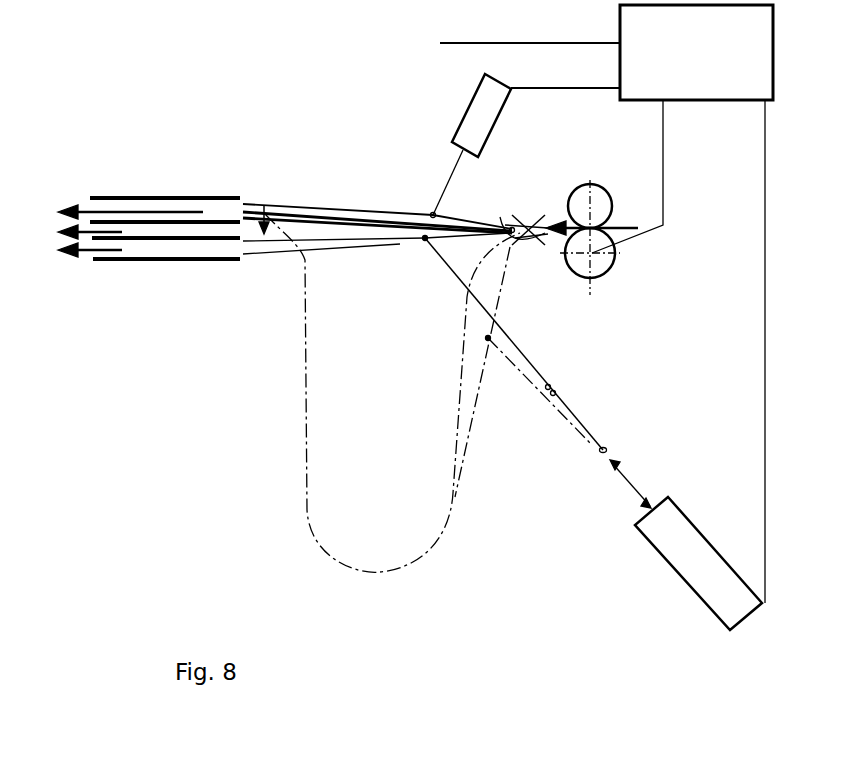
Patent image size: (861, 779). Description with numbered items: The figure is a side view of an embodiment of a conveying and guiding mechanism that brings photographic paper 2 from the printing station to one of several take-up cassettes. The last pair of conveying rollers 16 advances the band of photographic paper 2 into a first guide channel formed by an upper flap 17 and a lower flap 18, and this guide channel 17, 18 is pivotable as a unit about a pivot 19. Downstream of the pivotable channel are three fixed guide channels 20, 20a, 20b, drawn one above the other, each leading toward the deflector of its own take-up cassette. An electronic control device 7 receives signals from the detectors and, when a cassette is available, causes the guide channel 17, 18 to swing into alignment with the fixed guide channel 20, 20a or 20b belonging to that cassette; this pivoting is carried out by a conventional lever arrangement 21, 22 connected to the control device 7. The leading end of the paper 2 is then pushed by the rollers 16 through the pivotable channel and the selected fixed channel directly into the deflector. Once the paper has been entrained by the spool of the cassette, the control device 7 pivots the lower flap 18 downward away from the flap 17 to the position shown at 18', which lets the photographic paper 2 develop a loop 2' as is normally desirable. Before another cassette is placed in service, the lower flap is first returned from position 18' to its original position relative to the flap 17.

The photographic paper 2 is at (348, 171).
The loop 2' is at (521, 445).
The electronic control device 7 is at (720, 100).
The conveying rollers 16 is at (603, 213).
The flap 17 is at (338, 210).
The flap 18 is at (392, 393).
The position of lower flap 18' is at (498, 372).
The pivot 19 is at (502, 218).
The fixed guide channel 20 is at (200, 217).
The fixed guide channel 20a is at (163, 230).
The fixed guide channel 20b is at (137, 250).
The lever arrangement 21 is at (480, 112).
The lever arrangement 22 is at (663, 540).